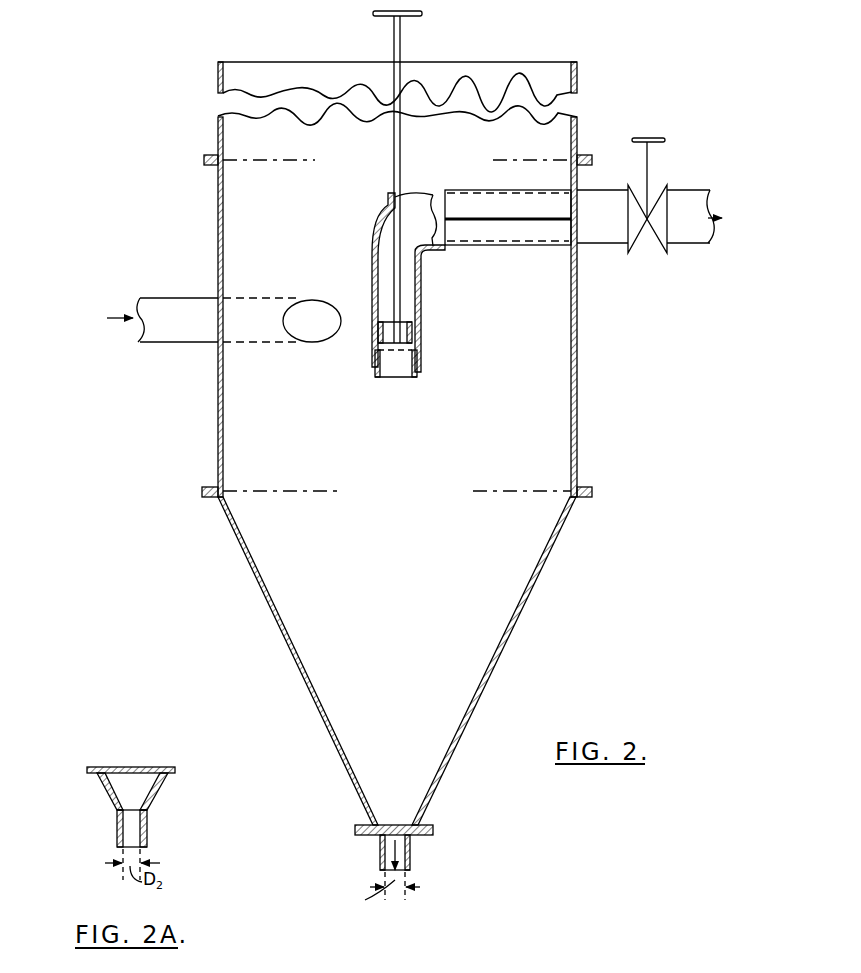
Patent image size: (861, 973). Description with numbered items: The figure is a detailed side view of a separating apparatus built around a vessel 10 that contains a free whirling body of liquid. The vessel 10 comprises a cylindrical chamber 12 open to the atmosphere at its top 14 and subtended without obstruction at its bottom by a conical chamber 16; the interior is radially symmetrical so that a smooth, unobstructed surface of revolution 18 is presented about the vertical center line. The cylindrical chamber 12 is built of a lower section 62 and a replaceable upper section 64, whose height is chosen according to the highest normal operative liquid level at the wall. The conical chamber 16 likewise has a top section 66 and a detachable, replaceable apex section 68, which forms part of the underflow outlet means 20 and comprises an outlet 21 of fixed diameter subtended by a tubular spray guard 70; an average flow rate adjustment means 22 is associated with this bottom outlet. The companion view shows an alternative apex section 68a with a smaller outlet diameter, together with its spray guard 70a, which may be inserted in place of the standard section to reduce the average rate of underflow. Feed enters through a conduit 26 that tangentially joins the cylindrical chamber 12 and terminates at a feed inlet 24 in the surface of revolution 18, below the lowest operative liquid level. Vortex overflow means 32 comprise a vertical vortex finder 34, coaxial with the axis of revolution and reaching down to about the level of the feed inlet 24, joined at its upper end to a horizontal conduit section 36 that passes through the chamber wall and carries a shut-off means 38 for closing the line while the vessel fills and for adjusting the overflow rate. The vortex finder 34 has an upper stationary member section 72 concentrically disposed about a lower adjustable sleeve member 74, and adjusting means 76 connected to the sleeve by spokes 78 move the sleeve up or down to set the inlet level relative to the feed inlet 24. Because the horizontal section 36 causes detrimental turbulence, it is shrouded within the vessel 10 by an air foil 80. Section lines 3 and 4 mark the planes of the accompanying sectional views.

In FIG. 2, the vessel 10 is at (420, 497).
In FIG. 2, the cylindrical chamber 12 is at (420, 307).
In FIG. 2, the top 14 is at (528, 70).
In FIG. 2, the conical chamber 16 is at (407, 661).
In FIG. 2, the surface of revolution 18 is at (550, 535).
In FIG. 2, the underflow outlet means 20 is at (399, 875).
In FIG. 2A, the underflow outlet means 20 is at (130, 828).
In FIG. 2, the outlet 21 is at (399, 877).
In FIG. 2, the average flow rate adjustment means 22 is at (416, 843).
In FIG. 2A, the average flow rate adjustment means 22 is at (152, 793).
In FIG. 2, the feed inlet 24 is at (312, 331).
In FIG. 2, the conduit 26 is at (186, 345).
In FIG. 2, the vortex overflow means 32 is at (437, 192).
In FIG. 2, the vortex finder 34 is at (409, 297).
In FIG. 2, the horizontal conduit section 36 is at (679, 210).
In FIG. 2, the shut-off means 38 is at (647, 218).
In FIG. 2, the lower section 62 is at (577, 338).
In FIG. 2, the upper section 64 is at (578, 146).
In FIG. 2, the top section 66 is at (478, 708).
In FIG. 2, the apex section 68 is at (412, 850).
In FIG. 2, the tubular spray guard 70 is at (413, 862).
In FIG. 2, the stationary member section 72 is at (395, 286).
In FIG. 2, the adjustable sleeve member 74 is at (376, 360).
In FIG. 2, the adjusting means 76 is at (393, 152).
In FIG. 2, the spokes 78 is at (404, 336).
In FIG. 2, the air foil 80 is at (482, 190).
In FIG. 2A, the apex section 68a is at (108, 790).
In FIG. 2A, the nozzle outlet (alternative) 70a is at (118, 828).
In FIG. 2, the section line 3- 3 is at (200, 106).
In FIG. 2, the section line 4- 4 is at (491, 188).